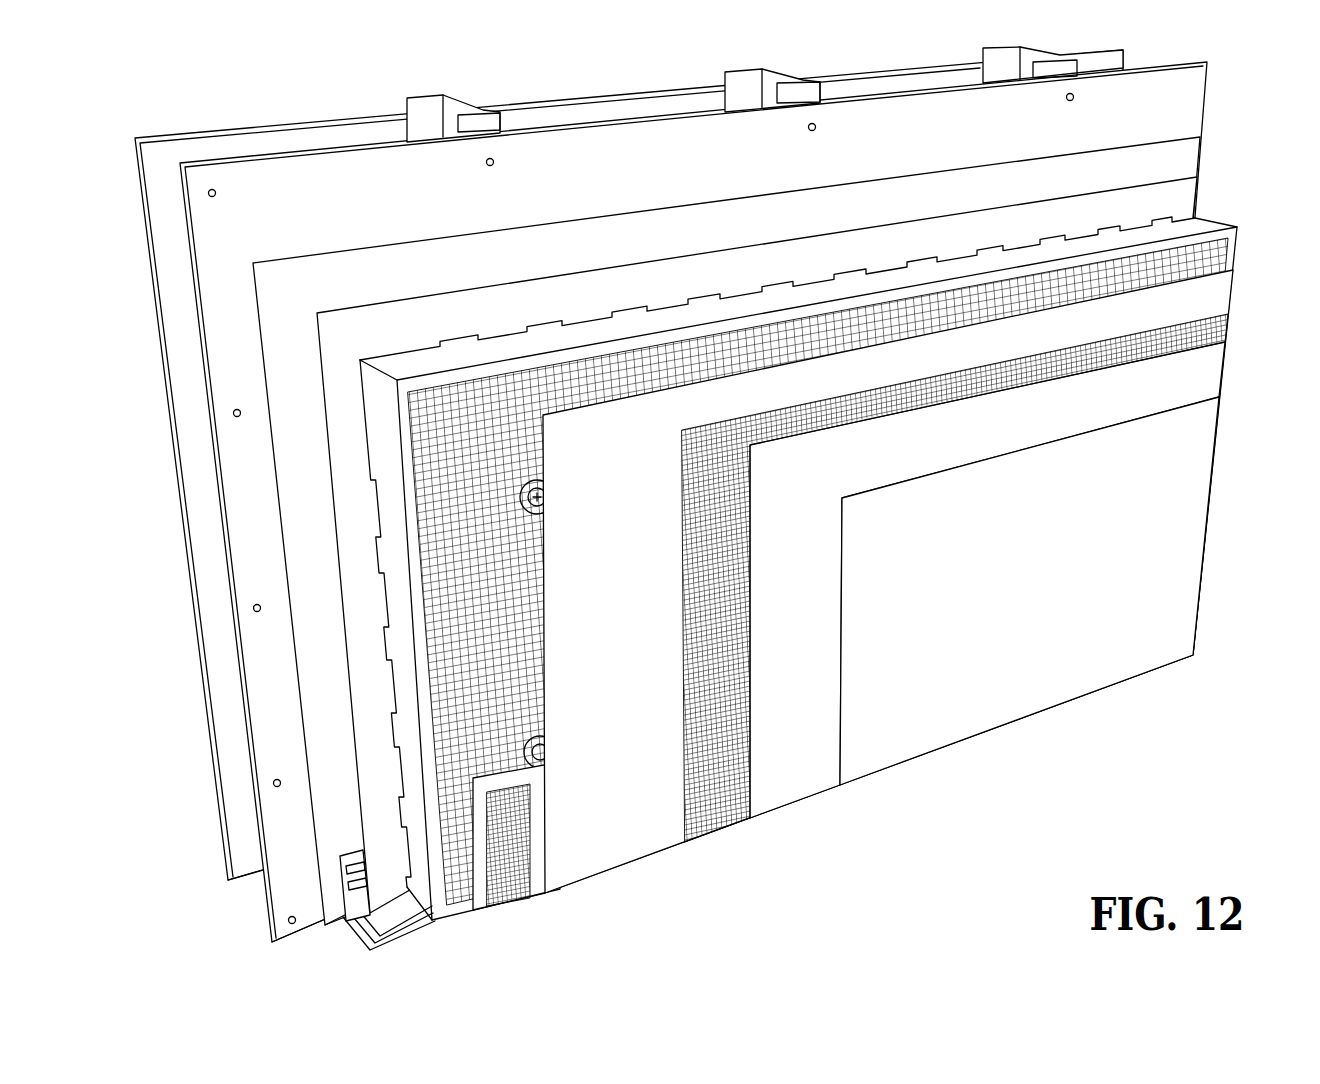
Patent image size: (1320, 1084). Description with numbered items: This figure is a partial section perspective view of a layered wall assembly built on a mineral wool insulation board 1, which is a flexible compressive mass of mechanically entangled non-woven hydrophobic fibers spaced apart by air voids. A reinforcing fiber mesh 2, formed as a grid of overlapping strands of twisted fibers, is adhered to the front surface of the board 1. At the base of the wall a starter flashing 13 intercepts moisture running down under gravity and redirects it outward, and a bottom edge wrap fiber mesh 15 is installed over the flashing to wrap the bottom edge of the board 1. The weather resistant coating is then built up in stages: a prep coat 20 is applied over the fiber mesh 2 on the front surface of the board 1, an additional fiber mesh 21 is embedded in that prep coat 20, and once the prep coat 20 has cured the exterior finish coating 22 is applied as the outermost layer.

The mineral wool insulation board 1 is at (1215, 227).
The reinforcing fiber mesh 2 is at (413, 490).
The starter flashing 13 is at (350, 857).
The bottom edge wrap fiber mesh 15 is at (525, 860).
The prep coat 20 is at (623, 820).
The additional fiber mesh 21 is at (717, 792).
The exterior finish coating 22 is at (925, 718).